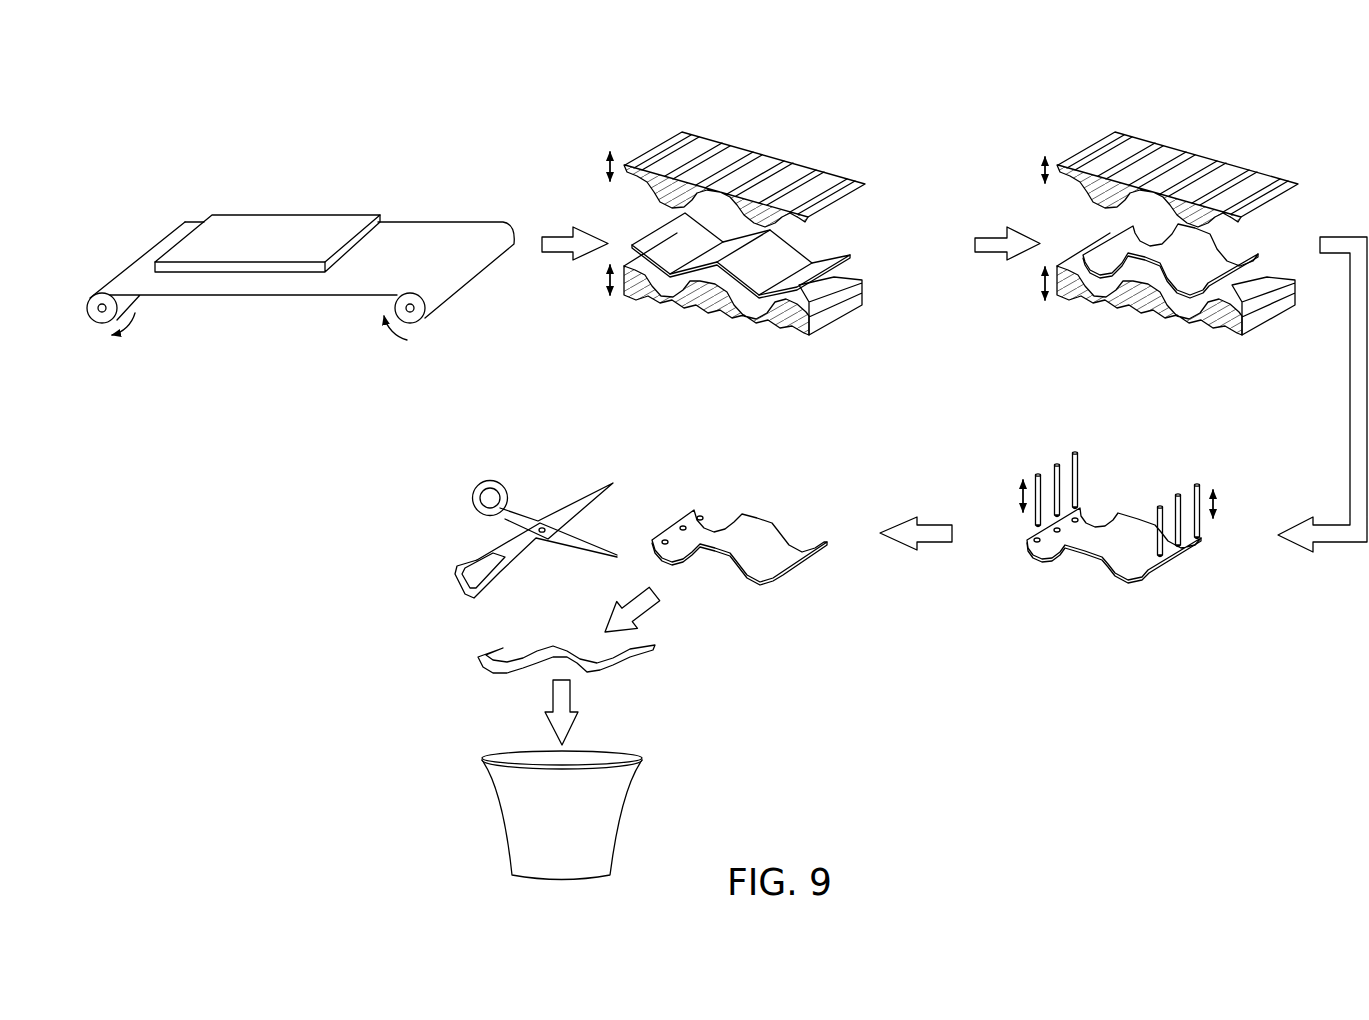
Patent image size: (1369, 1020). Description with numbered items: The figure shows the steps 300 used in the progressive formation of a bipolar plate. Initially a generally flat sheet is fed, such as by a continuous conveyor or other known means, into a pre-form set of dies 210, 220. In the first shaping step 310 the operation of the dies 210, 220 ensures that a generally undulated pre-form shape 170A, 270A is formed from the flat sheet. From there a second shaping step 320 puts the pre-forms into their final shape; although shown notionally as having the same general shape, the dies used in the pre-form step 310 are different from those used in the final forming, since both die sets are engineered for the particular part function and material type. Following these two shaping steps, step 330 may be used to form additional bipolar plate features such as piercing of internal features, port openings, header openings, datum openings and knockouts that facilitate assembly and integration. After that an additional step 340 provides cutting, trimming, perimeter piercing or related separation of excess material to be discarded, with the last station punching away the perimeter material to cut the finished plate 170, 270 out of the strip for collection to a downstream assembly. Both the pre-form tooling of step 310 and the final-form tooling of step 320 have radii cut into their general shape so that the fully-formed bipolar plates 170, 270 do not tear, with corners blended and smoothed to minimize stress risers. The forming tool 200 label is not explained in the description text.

The steps 300 is at (220, 147).
The forming die set 200 is at (706, 218).
The first shaping step 310 is at (736, 218).
The second shaping step 320 is at (1149, 210).
The step 330 is at (1168, 478).
The additional step 340 is at (757, 670).
The die 220 is at (797, 160).
The die 210 is at (693, 308).
The undulated pre-form shape 170A is at (756, 297).
The undulated pre-form shape 270A is at (782, 293).
The finished plate 170 is at (1167, 292).
The finished plate 270 is at (1160, 290).